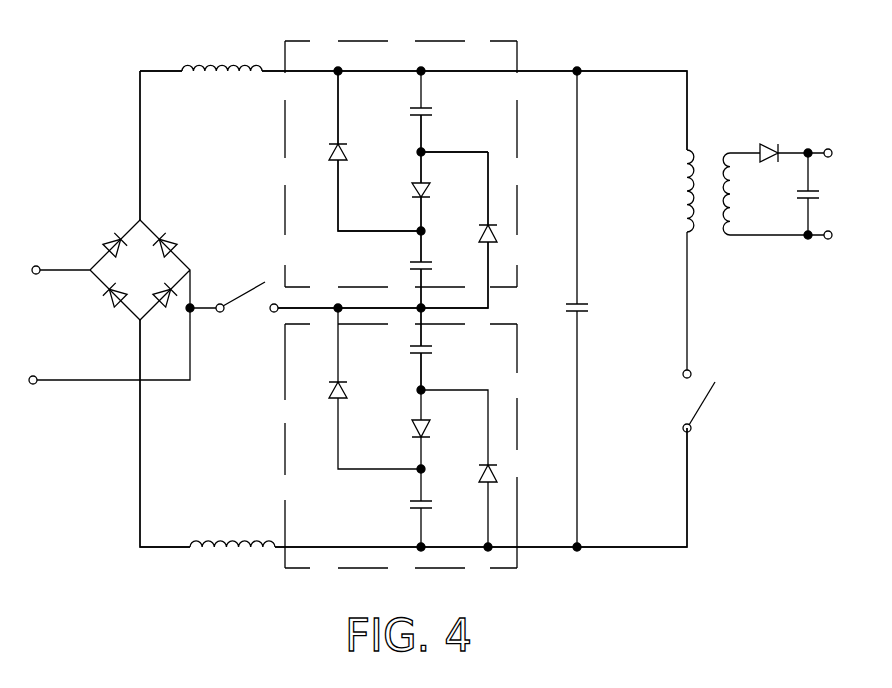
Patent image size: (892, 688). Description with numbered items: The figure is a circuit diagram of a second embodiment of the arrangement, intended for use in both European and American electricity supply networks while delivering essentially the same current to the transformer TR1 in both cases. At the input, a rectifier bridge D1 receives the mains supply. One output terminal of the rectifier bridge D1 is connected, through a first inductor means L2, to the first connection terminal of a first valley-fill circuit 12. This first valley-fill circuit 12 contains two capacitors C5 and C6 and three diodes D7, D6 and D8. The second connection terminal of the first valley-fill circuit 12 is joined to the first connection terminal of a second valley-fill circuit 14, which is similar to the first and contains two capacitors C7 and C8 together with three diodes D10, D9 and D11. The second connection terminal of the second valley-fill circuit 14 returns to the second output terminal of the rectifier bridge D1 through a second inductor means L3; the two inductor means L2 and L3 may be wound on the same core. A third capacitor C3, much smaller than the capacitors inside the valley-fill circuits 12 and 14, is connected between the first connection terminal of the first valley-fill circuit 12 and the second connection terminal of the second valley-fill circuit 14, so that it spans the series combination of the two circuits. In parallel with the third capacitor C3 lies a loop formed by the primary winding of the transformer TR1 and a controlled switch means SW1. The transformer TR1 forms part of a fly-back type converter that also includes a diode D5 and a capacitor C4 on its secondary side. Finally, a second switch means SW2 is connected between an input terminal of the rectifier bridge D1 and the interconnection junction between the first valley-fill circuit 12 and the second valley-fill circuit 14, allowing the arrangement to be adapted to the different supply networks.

The first valley-fill circuit 12 is at (517, 41).
The second valley-fill circuit 14 is at (517, 568).
The first inductor means L2 is at (222, 85).
The second inductor means L3 is at (232, 525).
The rectifier bridge D1 is at (160, 271).
The second switch means SW2 is at (232, 311).
The controlled switch means SW1 is at (678, 401).
The third capacitor C3 is at (559, 307).
The capacitor C4 is at (792, 195).
The capacitor C5 is at (404, 112).
The capacitor C6 is at (404, 267).
The capacitor C7 is at (404, 352).
The capacitor C8 is at (404, 507).
The diode D5 is at (770, 139).
The diode D6 is at (320, 152).
The diode D7 is at (403, 189).
The diode D8 is at (470, 234).
The diode D9 is at (321, 392).
The diode D10 is at (398, 430).
The diode D11 is at (470, 475).
The transformer TR1 is at (708, 183).